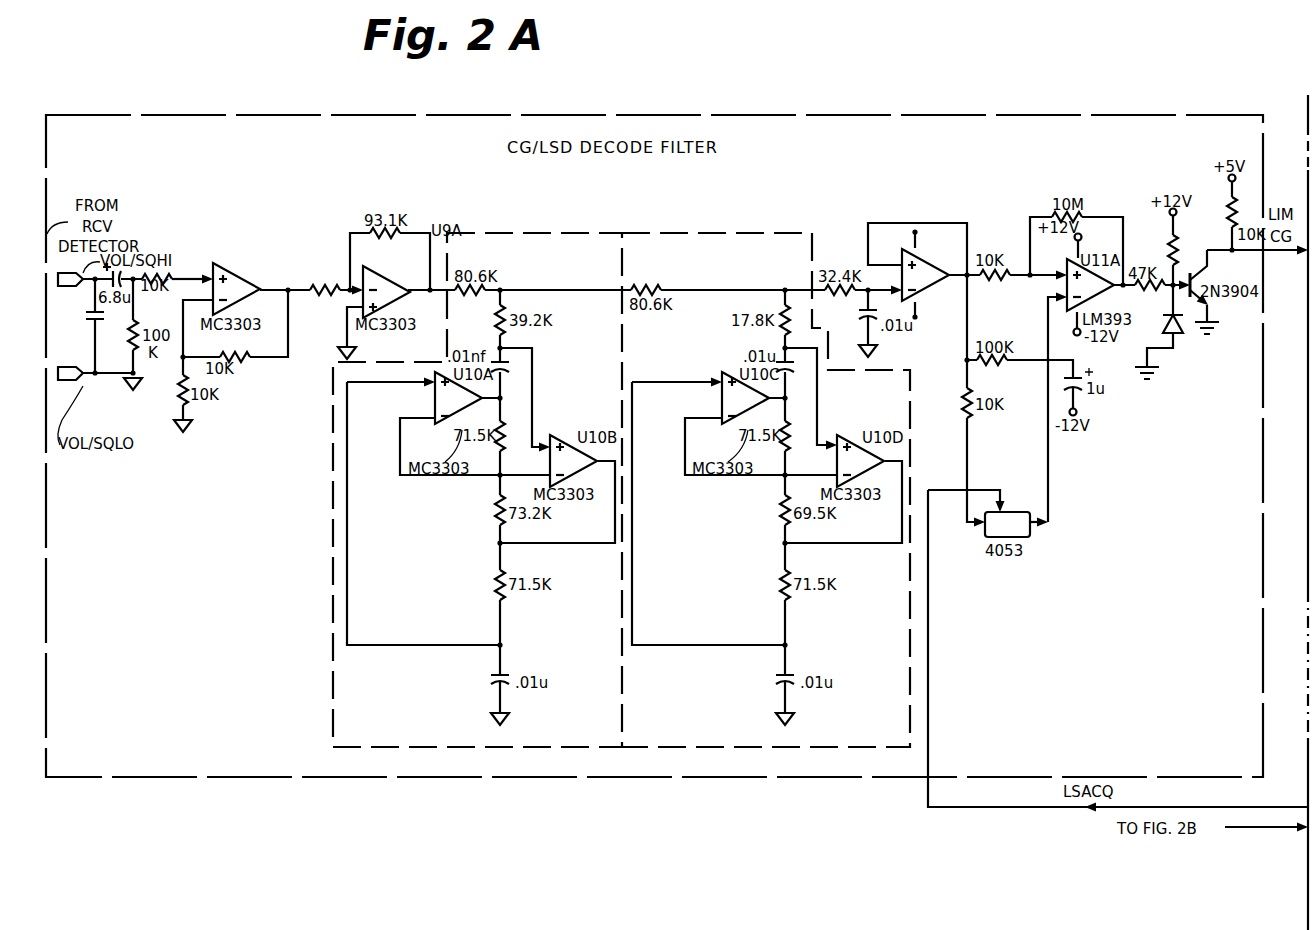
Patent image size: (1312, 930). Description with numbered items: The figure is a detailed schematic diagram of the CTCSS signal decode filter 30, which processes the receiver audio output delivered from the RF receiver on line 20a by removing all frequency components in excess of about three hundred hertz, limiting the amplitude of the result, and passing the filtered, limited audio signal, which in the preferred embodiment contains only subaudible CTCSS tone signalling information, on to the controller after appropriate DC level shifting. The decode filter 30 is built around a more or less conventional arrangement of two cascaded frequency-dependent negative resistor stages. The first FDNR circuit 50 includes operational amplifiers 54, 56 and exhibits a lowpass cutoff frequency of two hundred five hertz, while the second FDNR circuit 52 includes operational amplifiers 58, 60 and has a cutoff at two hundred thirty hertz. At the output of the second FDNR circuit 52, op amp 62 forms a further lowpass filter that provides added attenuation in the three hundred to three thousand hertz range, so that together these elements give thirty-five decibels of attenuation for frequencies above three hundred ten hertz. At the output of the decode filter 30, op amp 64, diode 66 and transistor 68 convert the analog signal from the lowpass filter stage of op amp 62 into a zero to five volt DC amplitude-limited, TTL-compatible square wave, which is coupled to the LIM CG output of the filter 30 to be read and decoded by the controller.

The line 20a is at (86, 320).
The CTCSS signal decode filter 30 is at (857, 115).
The first FDNR circuit 50 is at (541, 233).
The second FDNR circuit 52 is at (723, 233).
The operational amplifier 54 is at (430, 404).
The operational amplifier 56 is at (568, 440).
The operational amplifier 58 is at (718, 404).
The operational amplifier 60 is at (845, 440).
The op amp 62 is at (922, 292).
The op amp 64 is at (1062, 291).
The diode 66 is at (1180, 332).
The transistor 68 is at (1207, 262).